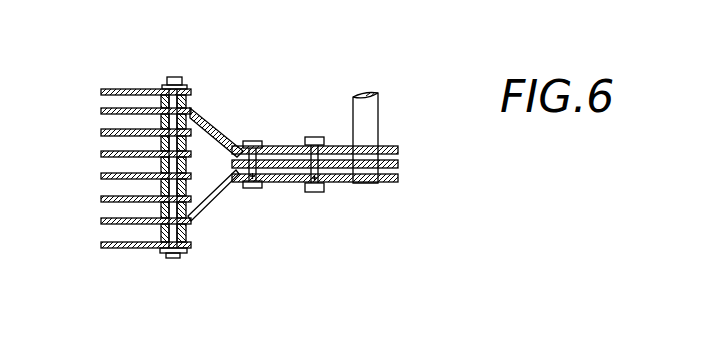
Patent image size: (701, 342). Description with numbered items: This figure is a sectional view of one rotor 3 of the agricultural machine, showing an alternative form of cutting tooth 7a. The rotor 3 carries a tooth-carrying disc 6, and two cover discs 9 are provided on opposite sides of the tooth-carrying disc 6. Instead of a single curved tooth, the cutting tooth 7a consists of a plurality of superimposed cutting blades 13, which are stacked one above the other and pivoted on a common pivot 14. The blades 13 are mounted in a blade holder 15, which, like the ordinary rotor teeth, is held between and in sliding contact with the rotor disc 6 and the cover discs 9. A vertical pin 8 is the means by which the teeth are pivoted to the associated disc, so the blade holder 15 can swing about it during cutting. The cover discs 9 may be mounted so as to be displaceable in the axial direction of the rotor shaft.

The rotor 3 is at (381, 203).
The tooth-carrying disc 6 is at (398, 164).
The cutting tooth 7a is at (110, 163).
The vertical pin 8 is at (253, 141).
The cover disc 9 is at (350, 147).
The cutting blade 13 is at (121, 173).
The pivot 14 is at (160, 187).
The blade holder 15 is at (220, 188).